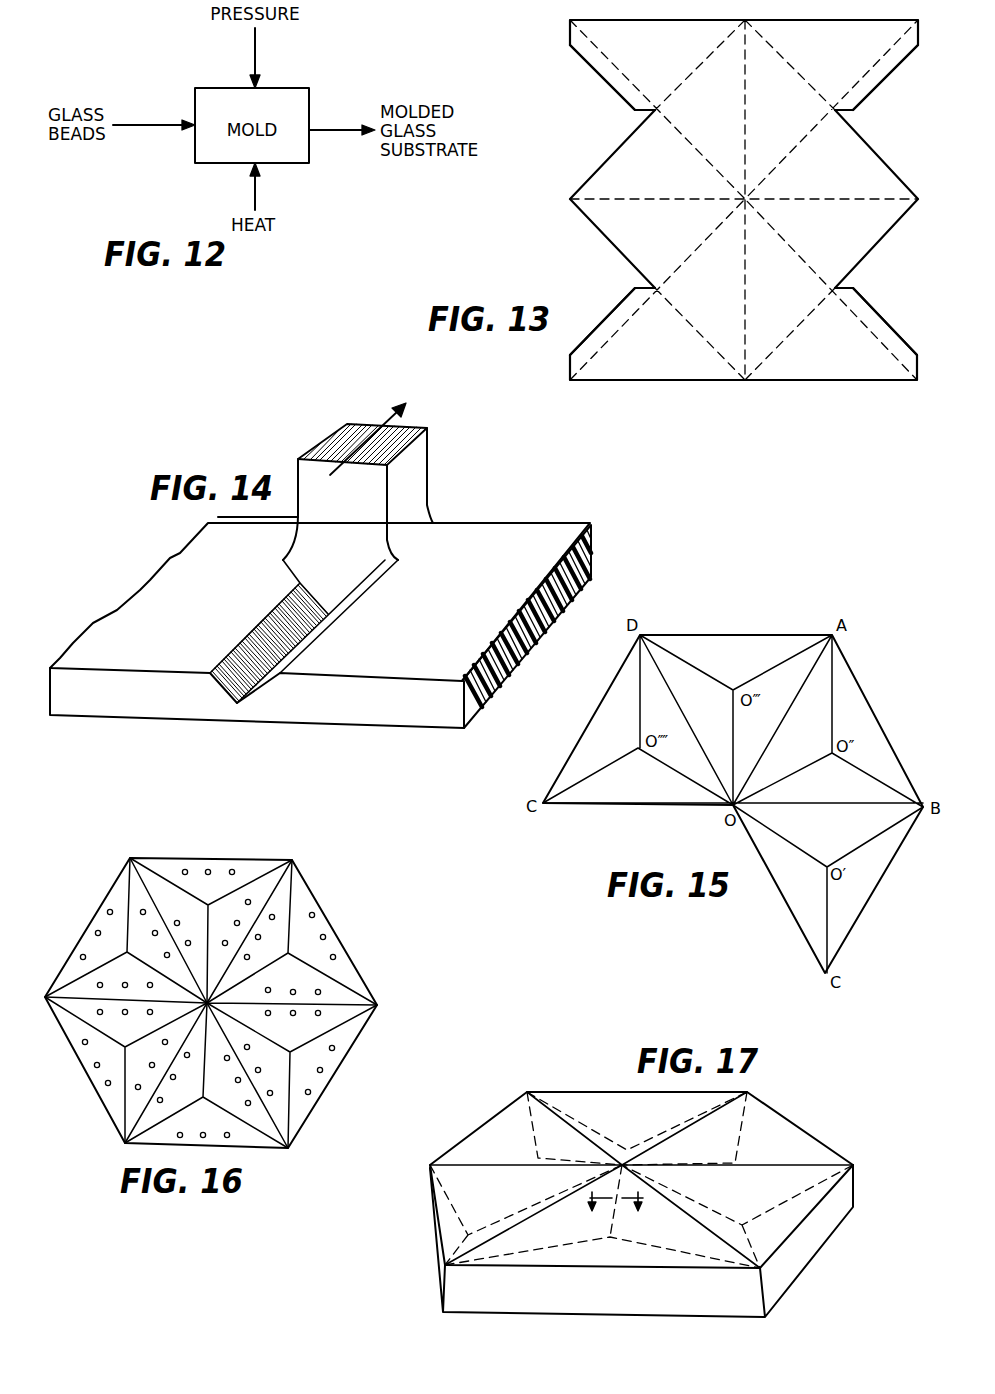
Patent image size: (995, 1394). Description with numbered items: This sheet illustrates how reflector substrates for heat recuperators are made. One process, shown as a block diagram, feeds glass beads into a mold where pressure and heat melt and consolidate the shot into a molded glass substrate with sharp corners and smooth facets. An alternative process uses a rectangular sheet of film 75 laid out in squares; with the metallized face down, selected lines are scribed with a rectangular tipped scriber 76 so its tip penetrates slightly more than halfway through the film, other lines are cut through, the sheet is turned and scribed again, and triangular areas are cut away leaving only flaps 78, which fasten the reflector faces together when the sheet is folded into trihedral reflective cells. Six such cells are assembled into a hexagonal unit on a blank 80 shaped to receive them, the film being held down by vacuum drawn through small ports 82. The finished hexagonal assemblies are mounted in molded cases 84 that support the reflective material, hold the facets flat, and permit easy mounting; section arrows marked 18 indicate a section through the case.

In FIG. 13, the rectangular sheet of film 75 is at (866, 380).
In FIG. 14, the rectangular sheet of film 75 is at (537, 527).
In FIG. 14, the rectangular tipped scriber 76 is at (420, 480).
In FIG. 13, the flaps 78 is at (612, 88).
In FIG. 16, the blank 80 is at (309, 889).
In FIG. 16, the small ports 82 is at (325, 936).
In FIG. 17, the molded cases 84 is at (548, 1312).
In FIG. 17, the section line 18- 18 is at (612, 1212).